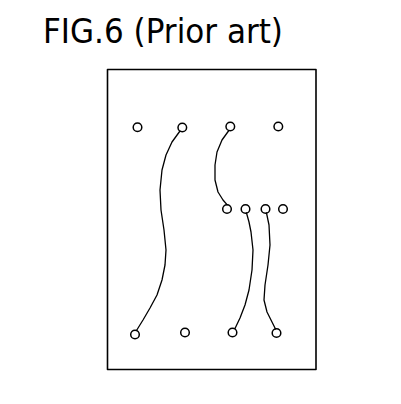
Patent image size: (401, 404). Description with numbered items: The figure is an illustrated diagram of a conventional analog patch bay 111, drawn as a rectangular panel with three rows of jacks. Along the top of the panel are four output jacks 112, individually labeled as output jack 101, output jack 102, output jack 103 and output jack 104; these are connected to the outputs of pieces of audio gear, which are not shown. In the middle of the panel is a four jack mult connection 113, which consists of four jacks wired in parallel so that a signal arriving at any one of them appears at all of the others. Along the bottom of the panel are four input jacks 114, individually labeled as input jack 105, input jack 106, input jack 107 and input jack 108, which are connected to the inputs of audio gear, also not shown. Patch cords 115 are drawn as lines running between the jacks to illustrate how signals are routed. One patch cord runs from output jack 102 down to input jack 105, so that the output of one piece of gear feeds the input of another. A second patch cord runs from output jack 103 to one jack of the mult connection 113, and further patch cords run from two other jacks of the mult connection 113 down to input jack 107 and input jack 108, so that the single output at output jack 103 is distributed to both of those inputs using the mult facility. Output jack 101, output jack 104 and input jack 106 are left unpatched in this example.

The output jack 101 is at (132, 142).
The output jack 102 is at (187, 143).
The output jack 103 is at (238, 141).
The output jack 104 is at (285, 141).
The input jack 105 is at (128, 321).
The input jack 106 is at (175, 324).
The input jack 107 is at (222, 322).
The input jack 108 is at (284, 322).
The patch bay 111 is at (321, 113).
The output jacks 112 is at (273, 121).
The mult connection 113 is at (292, 203).
The input jacks 114 is at (143, 338).
The patch cords 115 is at (165, 247).